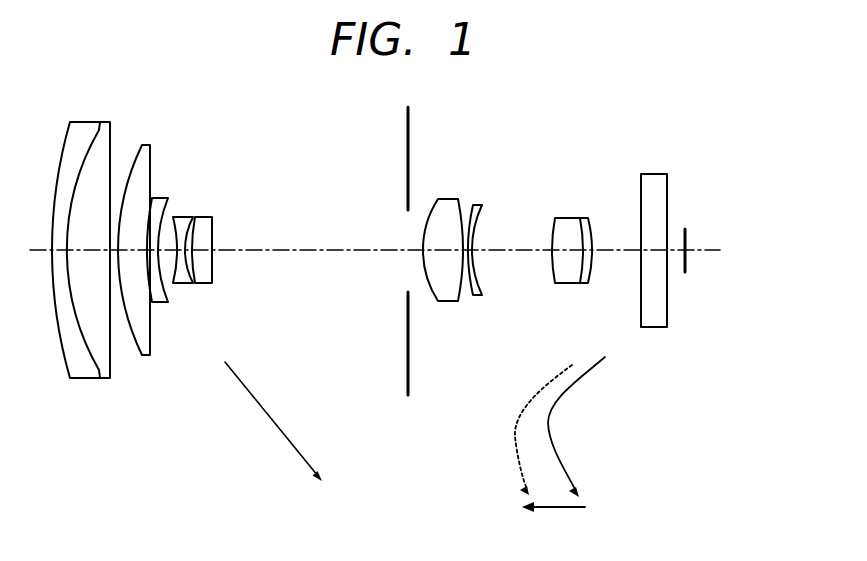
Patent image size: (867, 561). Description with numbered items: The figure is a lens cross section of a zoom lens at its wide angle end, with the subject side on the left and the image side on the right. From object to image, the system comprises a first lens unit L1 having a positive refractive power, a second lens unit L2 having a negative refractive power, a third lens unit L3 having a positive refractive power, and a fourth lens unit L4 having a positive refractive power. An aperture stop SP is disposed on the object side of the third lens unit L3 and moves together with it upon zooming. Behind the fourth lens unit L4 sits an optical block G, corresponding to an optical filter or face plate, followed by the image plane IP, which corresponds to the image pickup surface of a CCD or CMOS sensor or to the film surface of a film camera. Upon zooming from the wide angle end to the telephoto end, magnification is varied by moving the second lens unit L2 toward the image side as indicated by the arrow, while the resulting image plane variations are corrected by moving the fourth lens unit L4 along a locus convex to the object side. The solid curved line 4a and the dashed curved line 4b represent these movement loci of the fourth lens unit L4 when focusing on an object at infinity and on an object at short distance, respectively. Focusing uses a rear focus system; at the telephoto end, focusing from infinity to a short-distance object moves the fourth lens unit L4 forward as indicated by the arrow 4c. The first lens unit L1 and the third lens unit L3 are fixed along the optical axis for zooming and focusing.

The first lens unit L1 is at (163, 395).
The second lens unit L2 is at (238, 308).
The third lens unit L3 is at (500, 310).
The fourth lens unit L4 is at (612, 307).
The aperture stop SP is at (410, 121).
The optical block G is at (655, 180).
The image plane IP is at (687, 237).
The solid curved line 4a is at (576, 427).
The dashed curved line 4b is at (527, 430).
The arrow 4c is at (553, 522).